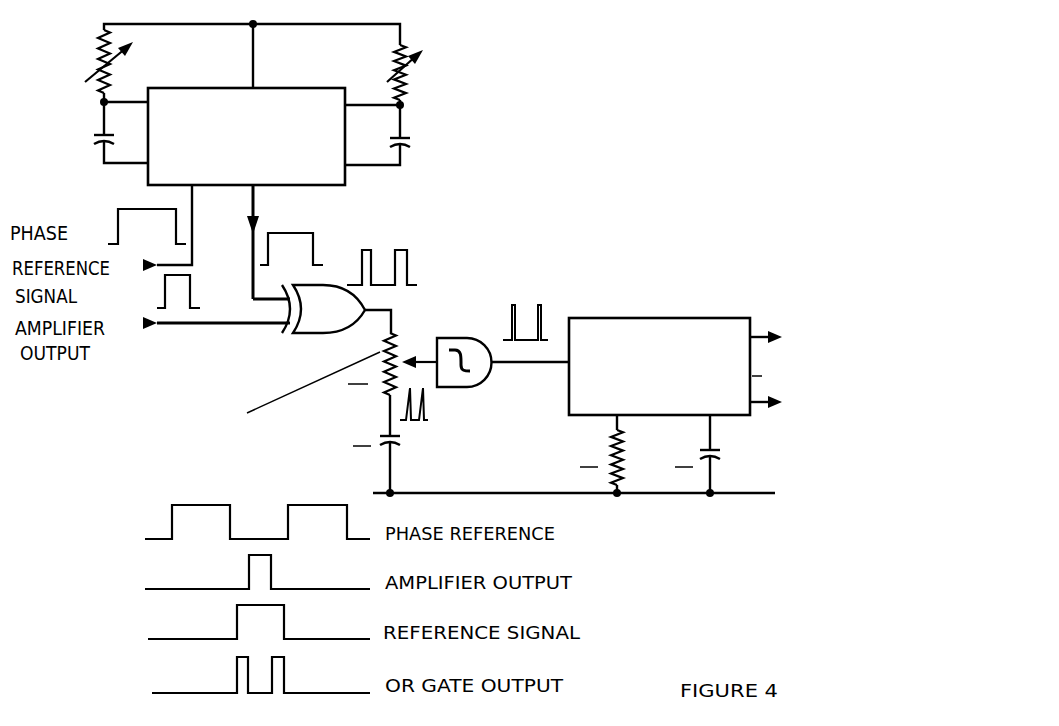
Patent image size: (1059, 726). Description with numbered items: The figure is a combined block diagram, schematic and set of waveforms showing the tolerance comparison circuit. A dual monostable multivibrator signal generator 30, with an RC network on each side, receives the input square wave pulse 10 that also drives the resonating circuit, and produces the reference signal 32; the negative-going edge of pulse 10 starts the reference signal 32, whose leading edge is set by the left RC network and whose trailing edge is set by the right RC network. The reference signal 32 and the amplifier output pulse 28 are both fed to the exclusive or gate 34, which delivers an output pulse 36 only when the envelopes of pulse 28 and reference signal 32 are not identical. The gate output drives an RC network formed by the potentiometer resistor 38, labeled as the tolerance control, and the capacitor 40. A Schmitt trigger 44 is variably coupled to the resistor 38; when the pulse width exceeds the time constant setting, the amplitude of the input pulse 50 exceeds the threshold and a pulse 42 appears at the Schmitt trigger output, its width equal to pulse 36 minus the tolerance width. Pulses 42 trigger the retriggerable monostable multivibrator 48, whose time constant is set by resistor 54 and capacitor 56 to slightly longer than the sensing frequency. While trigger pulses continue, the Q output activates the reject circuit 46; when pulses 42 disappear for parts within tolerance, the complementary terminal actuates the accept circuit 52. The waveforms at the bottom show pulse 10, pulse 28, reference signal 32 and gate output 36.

The input square wave pulse 10 is at (117, 216).
The amplifier output pulse 28 is at (196, 287).
The dual monostable multivibrator signal generator 30 is at (350, 181).
The reference signal 32 is at (318, 242).
The exclusive or gate 34 is at (292, 333).
The output pulse 36 is at (410, 260).
The potentiometer resistor 38 is at (383, 370).
The capacitor 40 is at (403, 443).
The pulse 42 is at (512, 317).
The Schmitt trigger 44 is at (440, 336).
The reject circuit 46 is at (778, 330).
The retriggerable monostable multivibrator 48 is at (598, 317).
The input pulse 50 is at (430, 412).
The accept circuit 52 is at (778, 406).
The resistor 54 is at (625, 458).
The capacitor 56 is at (722, 455).